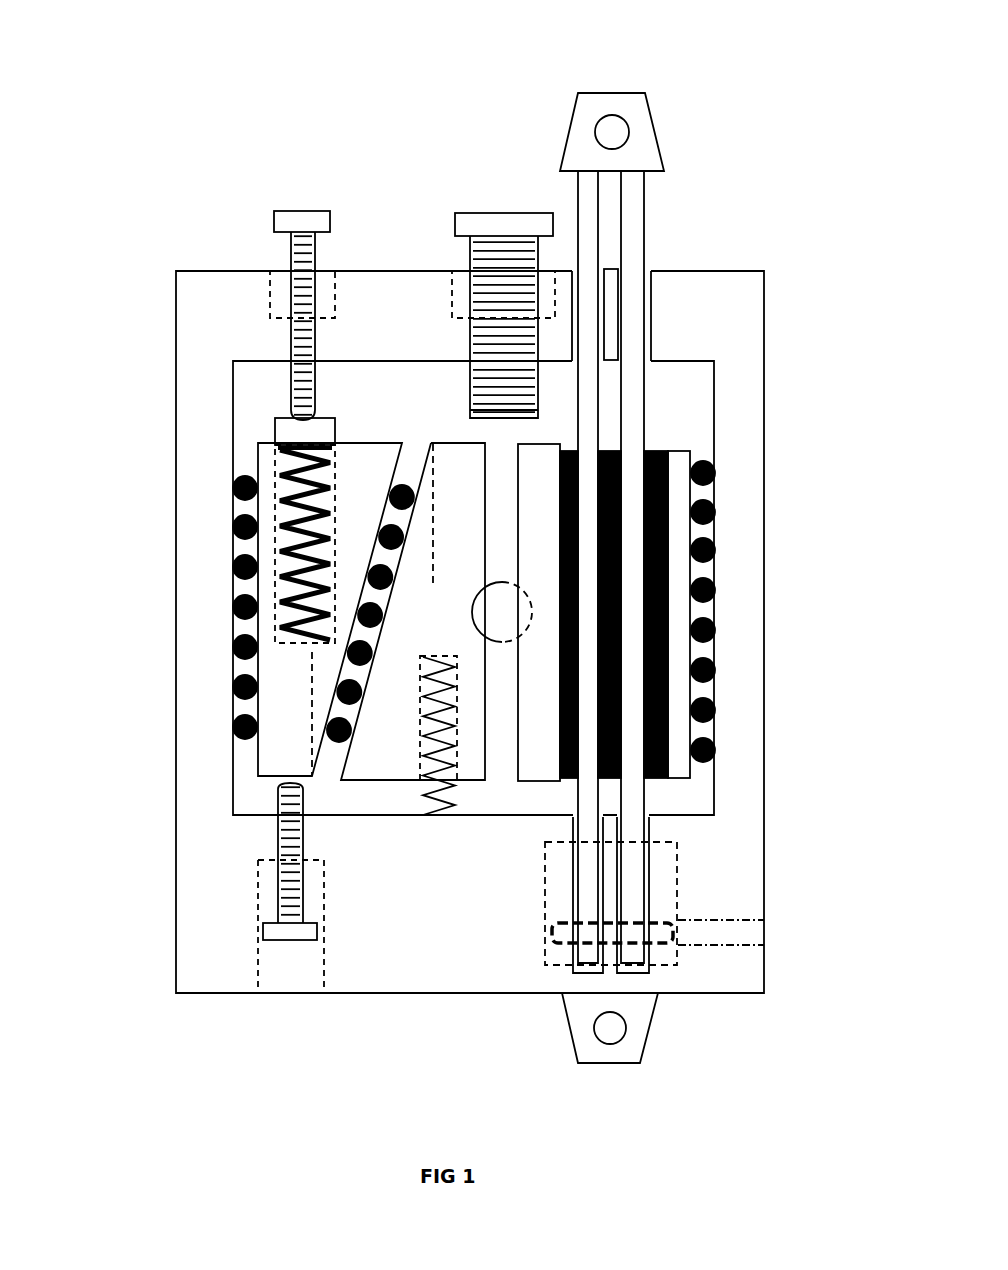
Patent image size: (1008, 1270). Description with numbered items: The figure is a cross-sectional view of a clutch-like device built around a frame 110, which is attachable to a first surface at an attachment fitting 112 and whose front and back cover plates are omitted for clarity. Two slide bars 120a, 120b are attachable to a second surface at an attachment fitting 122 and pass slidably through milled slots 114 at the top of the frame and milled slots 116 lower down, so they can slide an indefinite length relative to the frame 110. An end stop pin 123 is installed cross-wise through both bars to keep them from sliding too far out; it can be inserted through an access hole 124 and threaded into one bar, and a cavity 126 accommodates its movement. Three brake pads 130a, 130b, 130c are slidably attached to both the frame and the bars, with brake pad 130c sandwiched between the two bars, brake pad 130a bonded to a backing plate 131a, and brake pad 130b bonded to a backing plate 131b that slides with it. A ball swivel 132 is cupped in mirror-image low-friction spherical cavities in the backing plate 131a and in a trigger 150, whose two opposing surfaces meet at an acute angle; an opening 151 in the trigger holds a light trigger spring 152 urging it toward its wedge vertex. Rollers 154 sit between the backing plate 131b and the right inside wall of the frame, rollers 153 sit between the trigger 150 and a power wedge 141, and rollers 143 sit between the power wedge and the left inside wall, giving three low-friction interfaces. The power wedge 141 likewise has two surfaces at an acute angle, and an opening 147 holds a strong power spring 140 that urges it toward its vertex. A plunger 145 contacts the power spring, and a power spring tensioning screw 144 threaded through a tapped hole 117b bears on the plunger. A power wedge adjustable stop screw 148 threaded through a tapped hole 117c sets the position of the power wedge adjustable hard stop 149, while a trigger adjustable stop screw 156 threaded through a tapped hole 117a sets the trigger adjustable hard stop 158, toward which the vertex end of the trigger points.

The frame 110 is at (732, 335).
The attachment fitting 112 is at (613, 1028).
The milled slots 114 is at (648, 293).
The milled slots 116 is at (648, 830).
The tapped hole 117a is at (290, 338).
The tapped hole 117b is at (470, 330).
The tapped hole 117c is at (278, 833).
The slide bar 120a is at (592, 187).
The slide bar 120b is at (636, 232).
The attachment fitting 122 is at (612, 132).
The end stop pin 123 is at (673, 942).
The access hole 124 is at (733, 917).
The cavity 126 is at (678, 875).
The brake pad 130a is at (578, 612).
The brake pad 130b is at (668, 688).
The brake pad 130c is at (621, 725).
The backing plate 131a is at (682, 565).
The backing plate 131b is at (535, 485).
The ball swivel 132 is at (502, 612).
The power spring 140 is at (278, 468).
The power wedge 141 is at (347, 550).
The rollers 143 is at (240, 567).
The power spring tensioning screw 144 is at (300, 220).
The plunger 145 is at (300, 433).
The opening 147 is at (280, 507).
The power wedge adjustable stop screw 148 is at (290, 932).
The power wedge adjustable hard stop 149 is at (280, 780).
The trigger 150 is at (402, 662).
The opening 151 is at (418, 690).
The trigger spring 152 is at (420, 712).
The rollers 153 is at (310, 740).
The rollers 154 is at (713, 512).
The trigger adjustable stop screw 156 is at (498, 222).
The trigger adjustable hard stop 158 is at (470, 410).